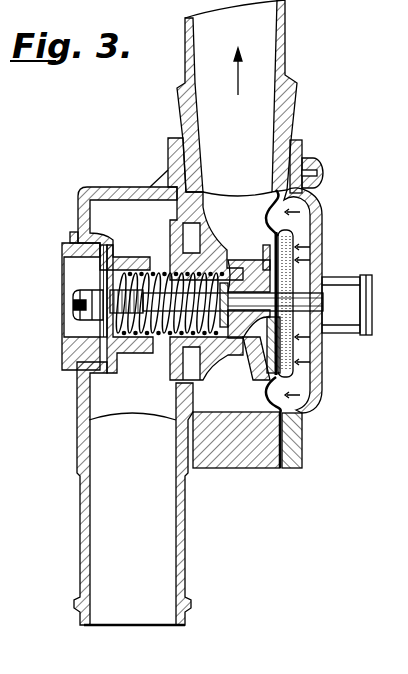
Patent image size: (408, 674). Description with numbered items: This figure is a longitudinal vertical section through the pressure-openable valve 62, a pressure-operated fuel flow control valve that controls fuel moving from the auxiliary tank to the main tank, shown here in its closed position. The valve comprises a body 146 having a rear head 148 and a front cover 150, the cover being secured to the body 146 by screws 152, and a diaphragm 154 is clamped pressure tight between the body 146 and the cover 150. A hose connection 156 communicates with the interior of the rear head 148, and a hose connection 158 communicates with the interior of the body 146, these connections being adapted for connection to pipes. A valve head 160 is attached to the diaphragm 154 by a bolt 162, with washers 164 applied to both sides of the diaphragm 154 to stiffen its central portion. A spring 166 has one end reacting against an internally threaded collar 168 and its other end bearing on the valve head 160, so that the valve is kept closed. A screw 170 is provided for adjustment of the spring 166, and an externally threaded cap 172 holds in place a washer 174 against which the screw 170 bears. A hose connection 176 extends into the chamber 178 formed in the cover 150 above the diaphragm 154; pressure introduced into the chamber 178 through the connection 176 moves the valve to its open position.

The pressure-openable valve 62 is at (340, 224).
The body 146 is at (217, 468).
The rear head 148 is at (77, 406).
The front cover 150 is at (312, 380).
The screws 152 is at (310, 156).
The diaphragm 154 is at (282, 468).
The hose connection 156 is at (108, 617).
The hose connection 158 is at (268, 50).
The valve head 160 is at (164, 372).
The bolt 162 is at (252, 290).
The washers 164 is at (291, 349).
The spring 166 is at (163, 268).
The internally threaded collar 168 is at (113, 330).
The screw 170 is at (82, 283).
The externally threaded cap 172 is at (62, 246).
The washer 174 is at (78, 228).
The hose connection 176 is at (333, 289).
The chamber 178 is at (303, 397).